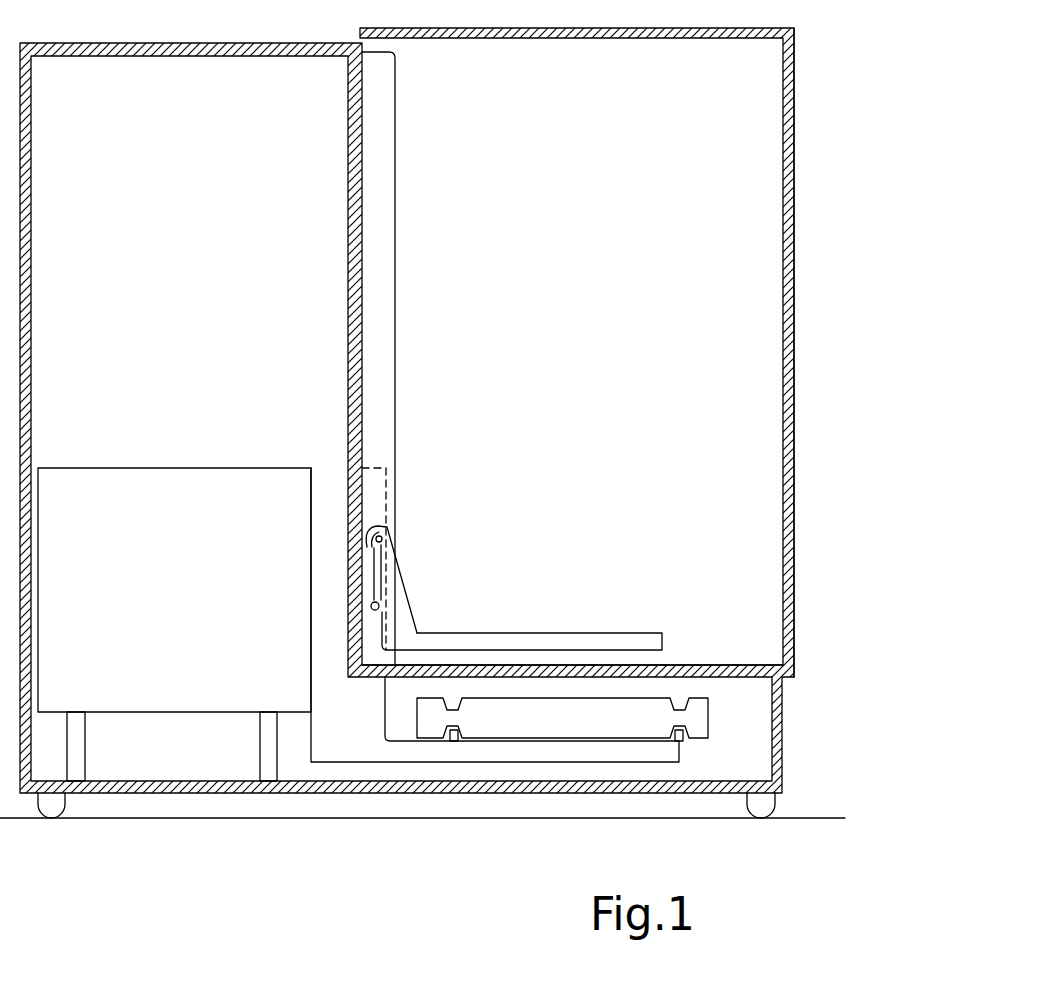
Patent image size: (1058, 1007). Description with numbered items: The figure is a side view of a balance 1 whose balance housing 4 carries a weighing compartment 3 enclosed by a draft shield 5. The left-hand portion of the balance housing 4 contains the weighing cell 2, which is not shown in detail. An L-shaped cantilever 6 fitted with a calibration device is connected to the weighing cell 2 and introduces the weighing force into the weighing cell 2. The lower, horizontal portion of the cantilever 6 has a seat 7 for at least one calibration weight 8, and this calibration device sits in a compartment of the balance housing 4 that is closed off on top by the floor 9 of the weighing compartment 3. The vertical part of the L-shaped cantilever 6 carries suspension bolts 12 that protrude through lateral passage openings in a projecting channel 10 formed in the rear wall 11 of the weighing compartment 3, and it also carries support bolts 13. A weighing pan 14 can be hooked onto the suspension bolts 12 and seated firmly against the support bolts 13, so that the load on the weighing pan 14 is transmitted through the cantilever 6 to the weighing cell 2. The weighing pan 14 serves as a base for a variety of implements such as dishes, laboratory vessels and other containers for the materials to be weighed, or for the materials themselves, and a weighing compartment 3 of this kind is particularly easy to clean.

The balance 1 is at (817, 124).
The weighing cell 2 is at (181, 589).
The weighing compartment 3 is at (578, 366).
The balance housing 4 is at (184, 366).
The draft shield 5 is at (798, 405).
The L-shaped cantilever 6 is at (355, 738).
The seat 7 is at (452, 742).
The calibration weight 8 is at (551, 718).
The floor 9 is at (721, 665).
The projecting channel 10 is at (373, 288).
The rear wall 11 is at (362, 226).
The suspension bolts 12 is at (382, 528).
The support bolts 13 is at (370, 608).
The weighing pan 14 is at (538, 630).